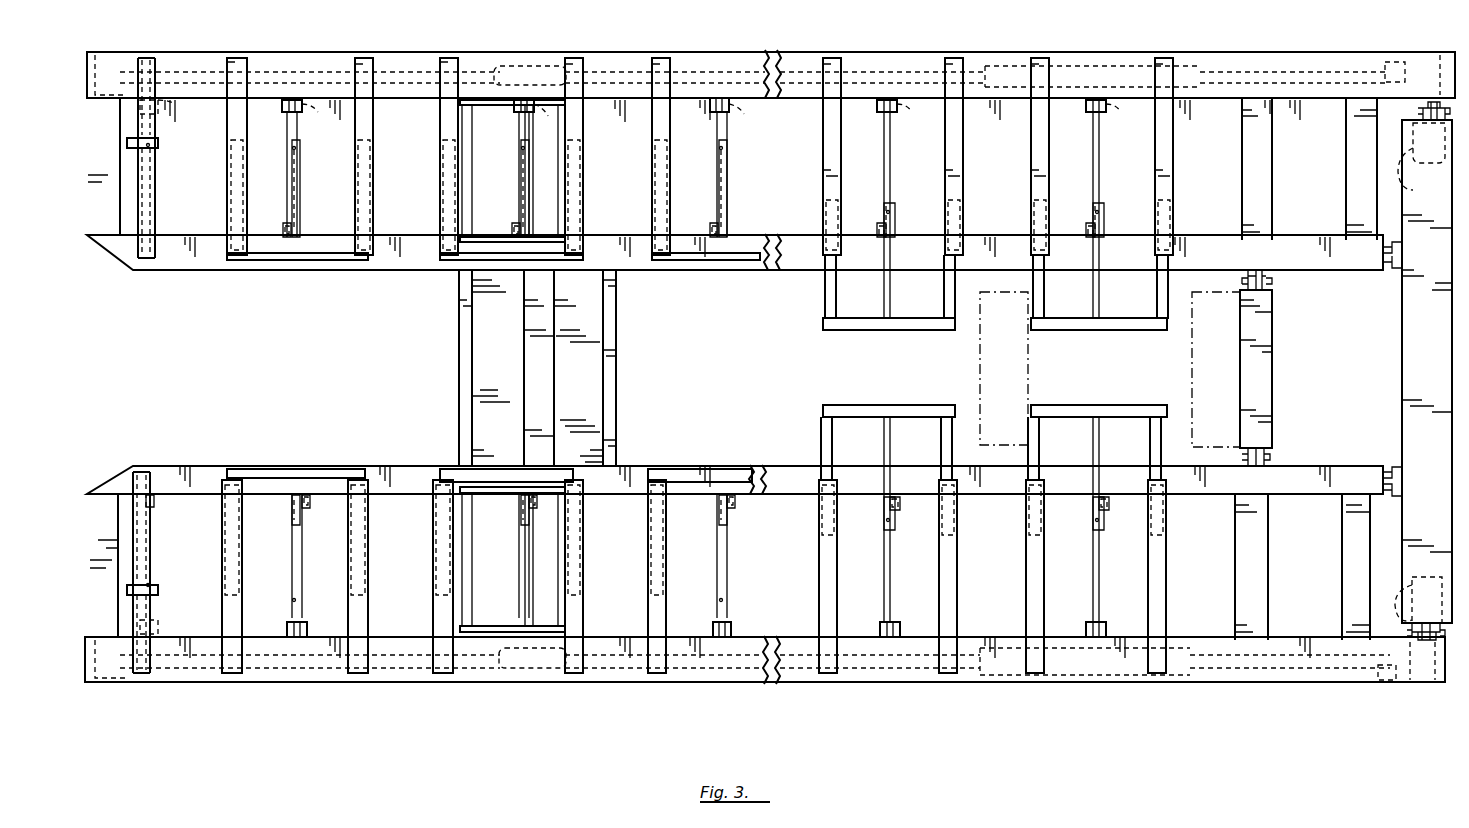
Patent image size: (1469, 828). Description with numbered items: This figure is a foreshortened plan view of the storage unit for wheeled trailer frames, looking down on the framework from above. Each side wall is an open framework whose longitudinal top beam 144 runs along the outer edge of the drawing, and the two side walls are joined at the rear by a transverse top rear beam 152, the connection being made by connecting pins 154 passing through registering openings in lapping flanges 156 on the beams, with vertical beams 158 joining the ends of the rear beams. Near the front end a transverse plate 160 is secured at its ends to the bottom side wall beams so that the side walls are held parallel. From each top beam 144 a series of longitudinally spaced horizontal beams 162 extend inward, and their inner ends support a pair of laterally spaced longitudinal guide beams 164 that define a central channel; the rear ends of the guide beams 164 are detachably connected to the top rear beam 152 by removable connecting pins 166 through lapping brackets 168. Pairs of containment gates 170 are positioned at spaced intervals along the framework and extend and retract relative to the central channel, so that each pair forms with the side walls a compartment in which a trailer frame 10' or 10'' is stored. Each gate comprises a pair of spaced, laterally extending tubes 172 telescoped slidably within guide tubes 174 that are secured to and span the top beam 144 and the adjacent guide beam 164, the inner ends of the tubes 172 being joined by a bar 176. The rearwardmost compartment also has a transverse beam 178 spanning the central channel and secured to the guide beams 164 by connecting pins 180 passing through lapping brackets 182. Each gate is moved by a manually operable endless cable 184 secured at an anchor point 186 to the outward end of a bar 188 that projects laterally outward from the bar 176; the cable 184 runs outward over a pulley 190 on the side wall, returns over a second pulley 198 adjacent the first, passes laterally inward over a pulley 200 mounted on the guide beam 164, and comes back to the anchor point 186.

The trailer frame 10' is at (1193, 369).
The trailer frame 10'' is at (983, 368).
The longitudinal top beam 144 is at (810, 55).
The transverse top rear beam 152 is at (1400, 392).
The connecting pins 154 is at (1440, 118).
The lapping flanges 156 is at (1422, 110).
The vertical beams 158 is at (1402, 187).
The transverse plate 160 is at (458, 366).
The horizontal beams 162 is at (105, 236).
The longitudinal guide beams 164 is at (795, 238).
The removable connecting pins 166 is at (1392, 466).
The lapping brackets 168 is at (1392, 492).
The containment gates 170 is at (863, 385).
The rods or tubes 172 is at (837, 278).
The guide tubes 174 is at (438, 112).
The bar 176 is at (912, 334).
The transverse beam 178 is at (1272, 366).
The connecting pins 180 is at (1245, 282).
The lapping brackets 182 is at (1268, 284).
The endless cable 184 is at (158, 185).
The anchor point 186 is at (150, 146).
The bar 188 is at (156, 208).
The pulley 190 is at (1086, 630).
The second pulley 198 is at (158, 110).
The pulley 200 is at (283, 228).